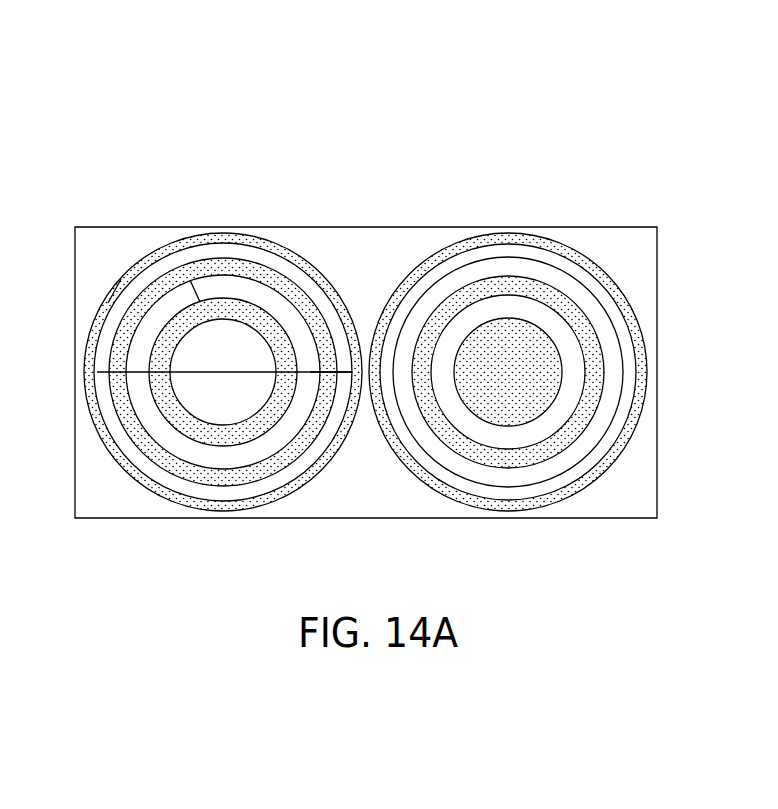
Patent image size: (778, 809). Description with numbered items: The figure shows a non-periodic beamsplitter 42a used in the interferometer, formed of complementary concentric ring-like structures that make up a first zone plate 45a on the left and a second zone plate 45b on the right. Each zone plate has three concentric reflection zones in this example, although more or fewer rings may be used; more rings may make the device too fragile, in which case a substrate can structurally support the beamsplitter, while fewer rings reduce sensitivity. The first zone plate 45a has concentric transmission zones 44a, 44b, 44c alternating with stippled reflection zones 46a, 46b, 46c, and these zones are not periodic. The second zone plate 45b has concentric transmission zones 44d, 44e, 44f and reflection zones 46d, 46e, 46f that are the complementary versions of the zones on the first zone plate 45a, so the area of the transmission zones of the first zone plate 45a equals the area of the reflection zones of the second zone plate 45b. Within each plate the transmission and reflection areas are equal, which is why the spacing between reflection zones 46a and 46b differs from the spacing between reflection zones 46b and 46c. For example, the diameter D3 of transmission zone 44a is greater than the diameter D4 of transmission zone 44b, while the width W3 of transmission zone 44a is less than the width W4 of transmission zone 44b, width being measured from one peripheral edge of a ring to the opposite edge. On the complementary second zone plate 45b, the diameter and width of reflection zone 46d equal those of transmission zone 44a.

The non-periodic beamsplitter 42a is at (610, 82).
The first zone plate 45a is at (106, 240).
The second zone plate 45b is at (428, 247).
The transmission zone 44a is at (145, 275).
The transmission zone 44b is at (147, 414).
The transmission zone 44c is at (212, 402).
The transmission zone 44d is at (498, 232).
The transmission zone 44e is at (543, 268).
The transmission zone 44f is at (567, 343).
The reflection zone 46a is at (172, 248).
The reflection zone 46b is at (283, 283).
The reflection zone 46c is at (228, 435).
The reflection zone 46d is at (625, 413).
The reflection zone 46e is at (505, 462).
The reflection zone 46f is at (498, 395).
The width of transmission zone 44a W3 is at (108, 298).
The width of transmission zone 44b W4 is at (190, 280).
The diameter of transmission zone 44a D3 is at (102, 372).
The diameter of transmission zone 44b D4 is at (310, 372).